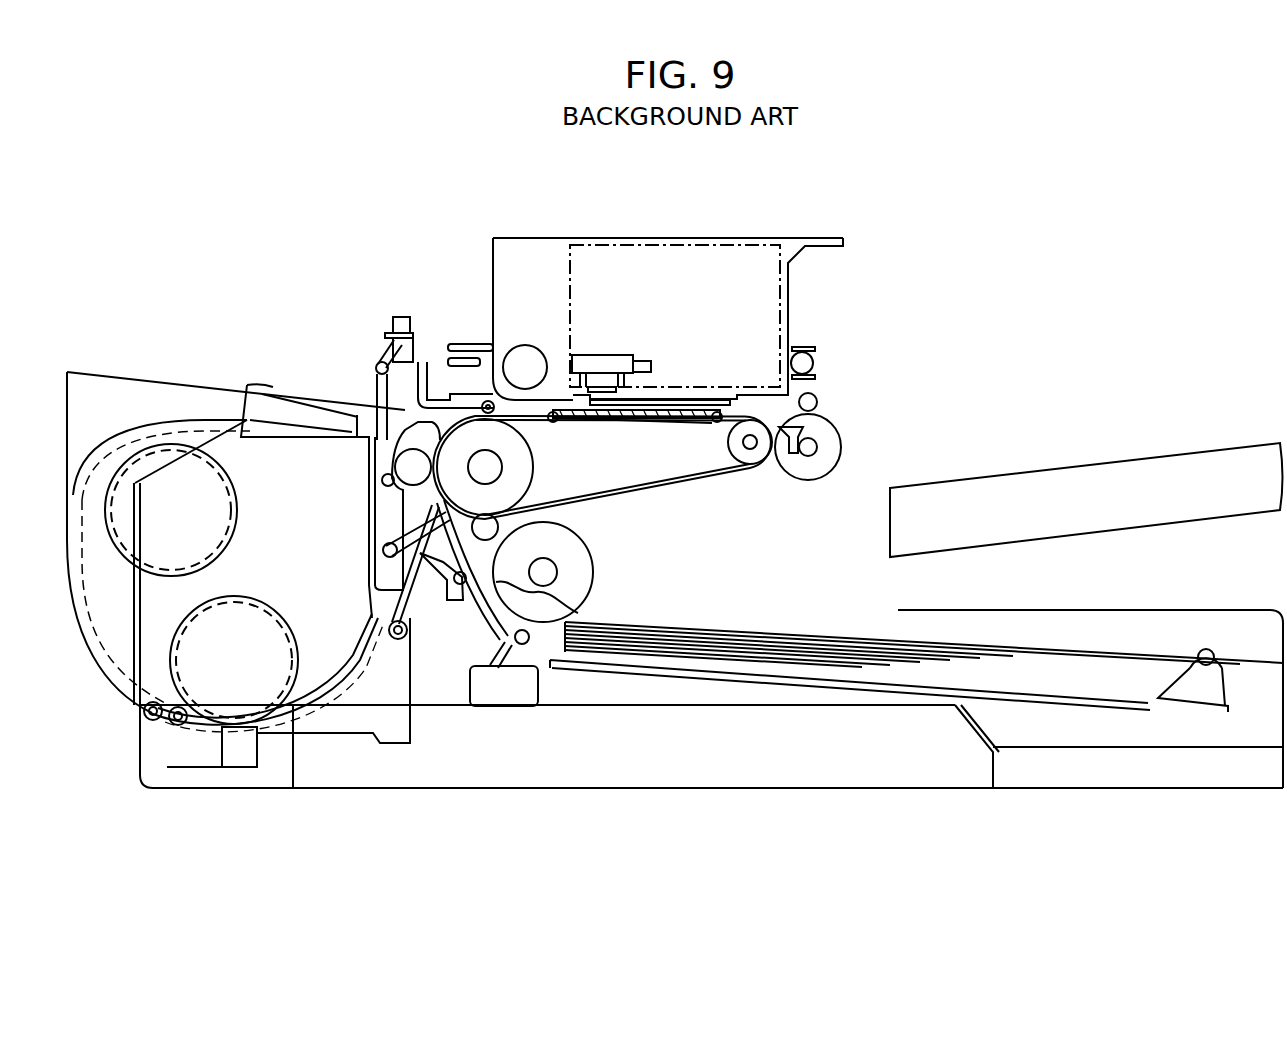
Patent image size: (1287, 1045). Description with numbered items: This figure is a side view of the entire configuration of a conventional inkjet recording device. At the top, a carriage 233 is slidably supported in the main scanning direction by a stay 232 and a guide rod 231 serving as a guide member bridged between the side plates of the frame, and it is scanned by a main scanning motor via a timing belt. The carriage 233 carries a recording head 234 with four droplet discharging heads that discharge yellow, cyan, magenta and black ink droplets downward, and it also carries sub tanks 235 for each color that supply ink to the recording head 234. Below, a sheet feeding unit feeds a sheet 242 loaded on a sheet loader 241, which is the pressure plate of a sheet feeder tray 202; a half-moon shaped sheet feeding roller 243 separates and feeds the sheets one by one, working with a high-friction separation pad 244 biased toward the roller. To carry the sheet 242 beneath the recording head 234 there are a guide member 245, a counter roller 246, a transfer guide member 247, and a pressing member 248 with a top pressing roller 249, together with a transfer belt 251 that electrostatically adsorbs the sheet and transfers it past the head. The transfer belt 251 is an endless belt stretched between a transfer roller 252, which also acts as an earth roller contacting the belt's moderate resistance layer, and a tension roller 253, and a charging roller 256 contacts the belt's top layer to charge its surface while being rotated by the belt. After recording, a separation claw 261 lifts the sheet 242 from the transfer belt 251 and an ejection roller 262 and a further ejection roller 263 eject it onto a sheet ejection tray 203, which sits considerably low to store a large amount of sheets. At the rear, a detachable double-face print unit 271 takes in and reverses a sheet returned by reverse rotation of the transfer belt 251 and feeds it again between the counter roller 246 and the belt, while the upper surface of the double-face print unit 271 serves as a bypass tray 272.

The sheet feeder tray 202 is at (1075, 772).
The sheet ejection tray 203 is at (1185, 466).
The guide rod 231 is at (526, 362).
The stay 232 is at (815, 362).
The carriage 233 is at (540, 240).
The recording head 234 is at (712, 396).
The sub tank 235 is at (697, 247).
The sheet loader 241 is at (690, 674).
The sheet 242 is at (838, 650).
The sheet feeding roller 243 is at (595, 568).
The separation pad 244 is at (535, 650).
The guide member 245 is at (440, 565).
The counter roller 246 is at (410, 480).
The transfer guide member 247 is at (377, 395).
The pressing member 248 is at (425, 360).
The top pressing roller 249 is at (487, 400).
The transfer belt 251 is at (672, 485).
The transfer roller 252 is at (520, 462).
The tension roller 253 is at (735, 440).
The charging roller 256 is at (500, 532).
The separation claw 261 is at (786, 455).
The ejection roller 262 is at (830, 450).
The ejection roller 263 is at (818, 400).
The double-face print unit 271 is at (107, 395).
The bypass tray 272 is at (222, 372).